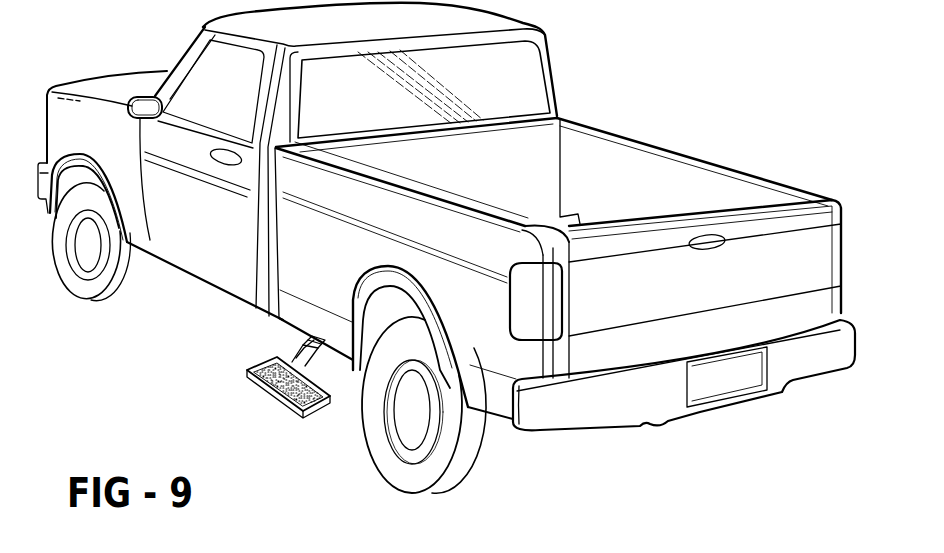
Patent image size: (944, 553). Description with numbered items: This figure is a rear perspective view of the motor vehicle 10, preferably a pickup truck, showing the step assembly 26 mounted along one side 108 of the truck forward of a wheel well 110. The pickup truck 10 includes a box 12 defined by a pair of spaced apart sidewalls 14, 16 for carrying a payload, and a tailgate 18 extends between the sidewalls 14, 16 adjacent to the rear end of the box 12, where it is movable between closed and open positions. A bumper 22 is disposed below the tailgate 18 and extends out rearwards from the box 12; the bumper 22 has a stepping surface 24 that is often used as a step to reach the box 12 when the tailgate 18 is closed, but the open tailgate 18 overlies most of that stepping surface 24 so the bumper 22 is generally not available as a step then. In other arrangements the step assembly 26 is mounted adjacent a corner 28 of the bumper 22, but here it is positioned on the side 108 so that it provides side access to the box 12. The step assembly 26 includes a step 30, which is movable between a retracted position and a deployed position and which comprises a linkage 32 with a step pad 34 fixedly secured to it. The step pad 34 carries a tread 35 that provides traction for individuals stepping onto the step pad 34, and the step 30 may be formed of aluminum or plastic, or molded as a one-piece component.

The motor vehicle 10 is at (783, 412).
The box 12 is at (610, 153).
The sidewall 14 is at (457, 200).
The sidewall 16 is at (703, 157).
The tailgate 18 is at (687, 212).
The bumper 22 is at (647, 416).
The stepping surface 24 is at (663, 367).
The step assembly 26 is at (294, 428).
The corner 28 is at (550, 424).
The step 30 is at (284, 397).
The linkage 32 is at (318, 373).
The step pad 34 is at (330, 405).
The tread 35 is at (262, 366).
The side 108 is at (283, 253).
The wheel well 110 is at (360, 321).